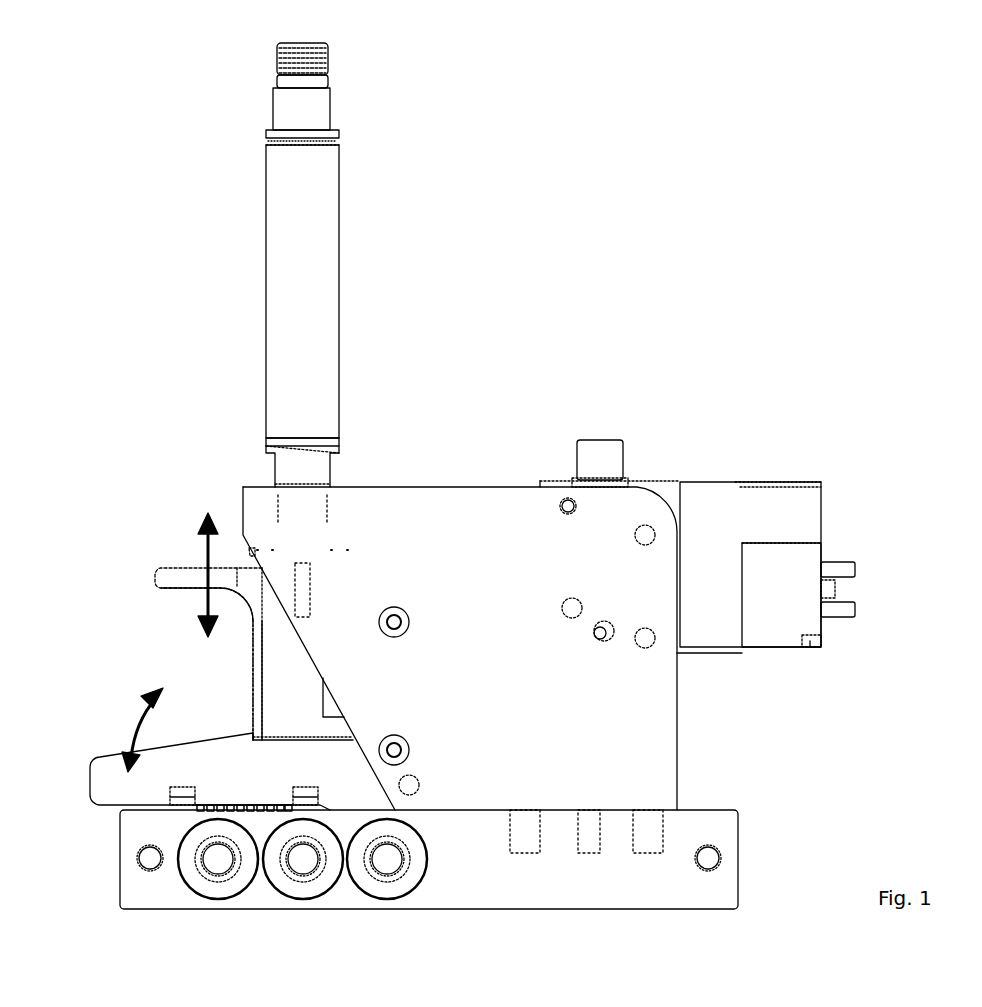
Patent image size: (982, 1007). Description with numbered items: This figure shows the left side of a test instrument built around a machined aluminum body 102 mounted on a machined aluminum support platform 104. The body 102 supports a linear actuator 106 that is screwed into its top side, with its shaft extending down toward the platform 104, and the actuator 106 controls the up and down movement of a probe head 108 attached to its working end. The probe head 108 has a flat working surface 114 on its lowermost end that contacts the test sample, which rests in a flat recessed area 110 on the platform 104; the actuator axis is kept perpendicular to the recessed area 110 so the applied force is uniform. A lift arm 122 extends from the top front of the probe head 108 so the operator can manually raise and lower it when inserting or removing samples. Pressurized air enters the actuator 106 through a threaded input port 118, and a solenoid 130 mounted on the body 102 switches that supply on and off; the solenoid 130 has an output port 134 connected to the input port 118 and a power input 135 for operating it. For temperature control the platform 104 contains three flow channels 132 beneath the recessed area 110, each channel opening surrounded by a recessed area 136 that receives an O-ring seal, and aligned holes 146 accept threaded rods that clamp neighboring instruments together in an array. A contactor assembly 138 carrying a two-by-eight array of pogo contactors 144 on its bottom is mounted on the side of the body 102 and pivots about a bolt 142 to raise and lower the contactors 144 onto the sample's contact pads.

The body 102 is at (473, 552).
The support platform 104 is at (496, 882).
The linear actuator 106 is at (328, 275).
The probe head 108 is at (316, 699).
The recessed area 110 is at (183, 815).
The working surface 114 is at (268, 726).
The input port 118 is at (327, 60).
The lift arm 122 is at (170, 577).
The solenoid 130 is at (738, 512).
The flow channels 132 is at (387, 859).
The output port 134 is at (595, 450).
The power input 135 is at (835, 568).
The recessed area 136 is at (202, 885).
The contactor assembly 138 is at (263, 781).
The bolt 142 is at (414, 782).
The POGO LC contactors 144 is at (243, 808).
The holes 146 is at (147, 862).